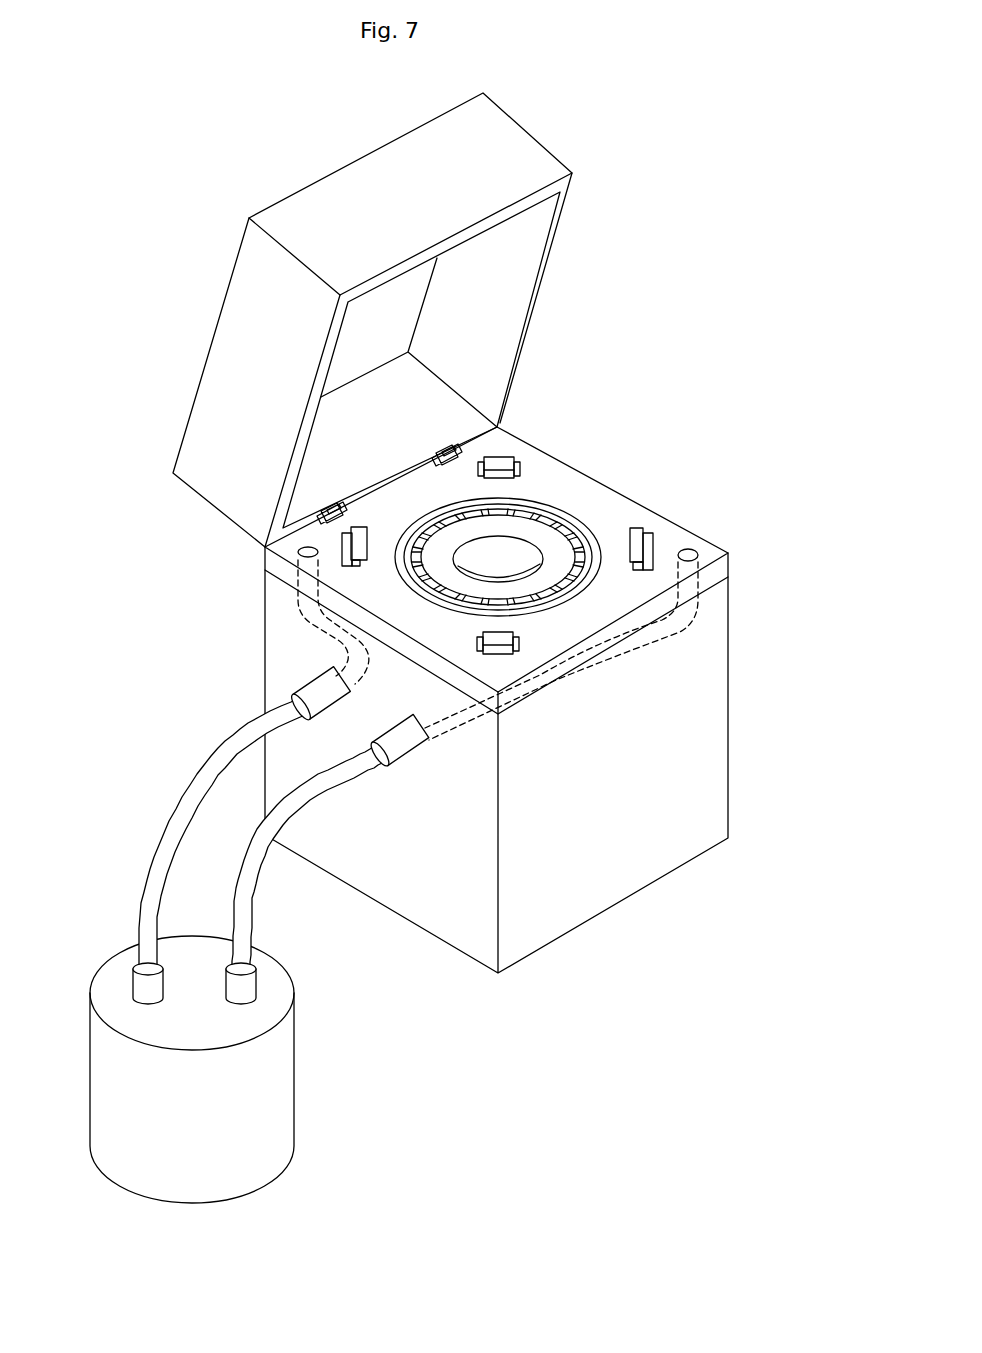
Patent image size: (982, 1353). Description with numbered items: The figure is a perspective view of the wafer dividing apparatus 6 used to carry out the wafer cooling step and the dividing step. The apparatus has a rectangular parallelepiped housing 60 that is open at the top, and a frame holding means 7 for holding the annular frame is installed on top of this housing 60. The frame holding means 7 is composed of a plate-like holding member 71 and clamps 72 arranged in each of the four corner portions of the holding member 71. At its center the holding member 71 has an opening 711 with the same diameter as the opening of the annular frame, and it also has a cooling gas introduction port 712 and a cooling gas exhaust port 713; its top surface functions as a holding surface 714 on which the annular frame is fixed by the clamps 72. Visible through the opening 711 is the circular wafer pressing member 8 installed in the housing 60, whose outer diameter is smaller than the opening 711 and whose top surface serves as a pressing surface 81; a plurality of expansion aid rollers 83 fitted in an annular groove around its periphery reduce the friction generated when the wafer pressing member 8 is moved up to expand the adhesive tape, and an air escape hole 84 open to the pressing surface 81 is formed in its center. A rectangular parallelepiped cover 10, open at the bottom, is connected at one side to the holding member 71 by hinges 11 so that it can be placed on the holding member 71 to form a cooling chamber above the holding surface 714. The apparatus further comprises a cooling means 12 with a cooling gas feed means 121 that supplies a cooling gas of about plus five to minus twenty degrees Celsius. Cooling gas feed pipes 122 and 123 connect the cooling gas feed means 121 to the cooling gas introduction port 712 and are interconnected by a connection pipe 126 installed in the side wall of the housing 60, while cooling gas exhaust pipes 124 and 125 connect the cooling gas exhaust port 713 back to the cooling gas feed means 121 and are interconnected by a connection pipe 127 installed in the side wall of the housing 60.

The wafer dividing apparatus 6 is at (652, 306).
The frame holding means 7 is at (495, 535).
The wafer pressing member 8 is at (536, 536).
The cover 10 is at (302, 185).
The hinges 11 is at (335, 505).
The cooling means 12 is at (394, 881).
The housing 60 is at (733, 690).
The holding member 71 is at (723, 572).
The clamps 72 is at (508, 460).
The pressing surface 81 is at (468, 587).
The expansion aid rollers 83 is at (570, 528).
The air escape hole 84 is at (477, 562).
The cooling gas feed means 121 is at (284, 1087).
The cooling gas feed pipe 122 is at (157, 872).
The cooling gas feed pipe 123 is at (303, 627).
The cooling gas exhaust pipe 124 is at (670, 620).
The cooling gas exhaust pipe 125 is at (251, 892).
The connection pipe 126 is at (333, 690).
The connection pipe 127 is at (410, 747).
The opening 711 is at (470, 503).
The cooling gas introduction port 712 is at (263, 561).
The cooling gas exhaust port 713 is at (689, 548).
The holding surface 714 is at (538, 470).